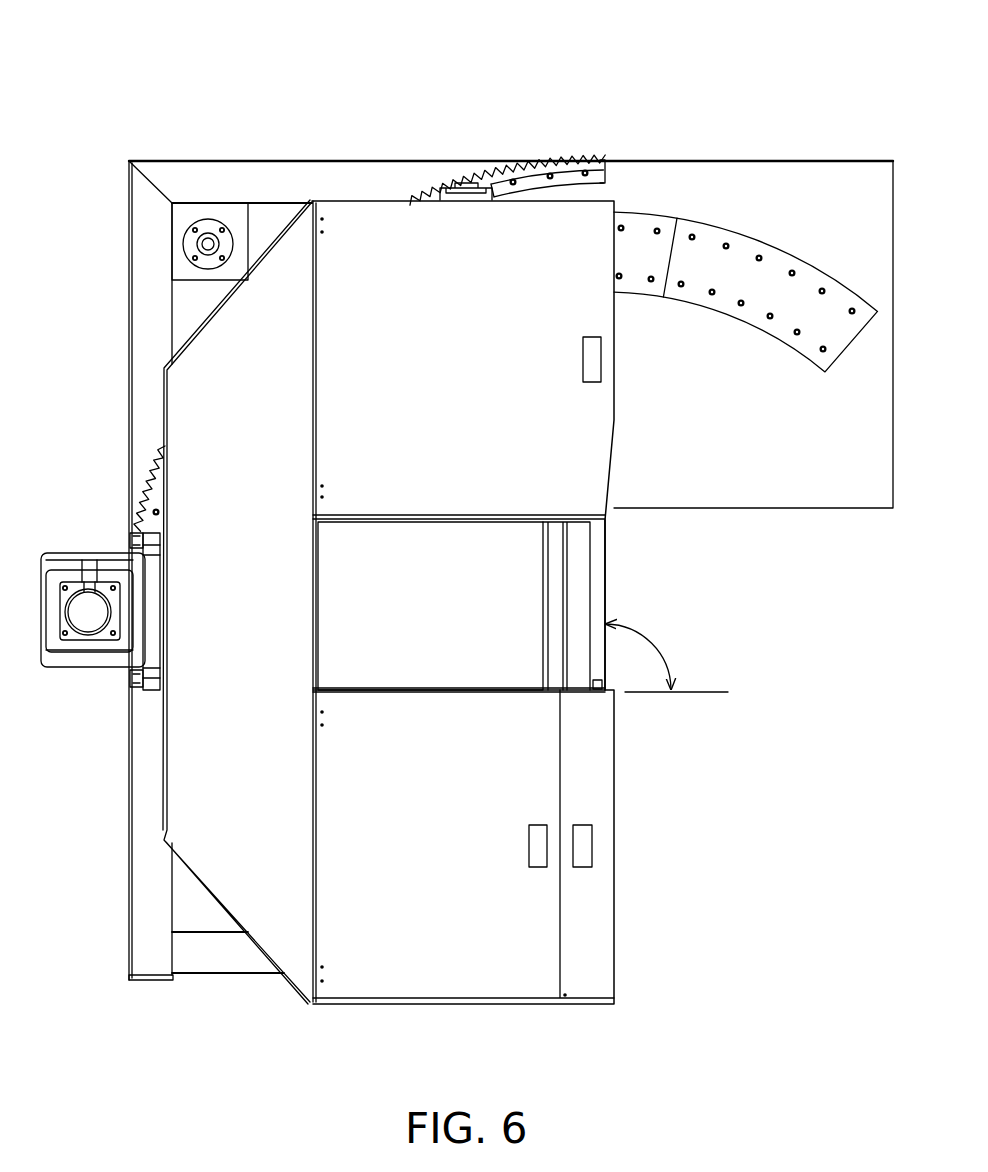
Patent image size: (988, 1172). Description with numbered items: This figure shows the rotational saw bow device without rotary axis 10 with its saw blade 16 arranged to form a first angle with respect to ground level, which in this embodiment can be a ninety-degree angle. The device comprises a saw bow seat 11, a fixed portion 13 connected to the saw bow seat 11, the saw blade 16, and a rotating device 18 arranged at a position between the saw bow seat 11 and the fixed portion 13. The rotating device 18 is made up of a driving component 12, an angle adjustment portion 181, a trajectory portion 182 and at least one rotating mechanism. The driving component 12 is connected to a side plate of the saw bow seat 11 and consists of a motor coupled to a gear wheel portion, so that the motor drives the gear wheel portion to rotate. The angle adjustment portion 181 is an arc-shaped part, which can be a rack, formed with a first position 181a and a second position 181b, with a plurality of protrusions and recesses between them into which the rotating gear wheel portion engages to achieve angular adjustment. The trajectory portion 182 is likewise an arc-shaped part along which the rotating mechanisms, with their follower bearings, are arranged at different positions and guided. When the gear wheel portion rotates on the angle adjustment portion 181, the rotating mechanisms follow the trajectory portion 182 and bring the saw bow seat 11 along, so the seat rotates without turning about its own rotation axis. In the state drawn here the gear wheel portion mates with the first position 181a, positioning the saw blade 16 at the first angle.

The rotational saw bow device without rotary axis 10 is at (120, 65).
The saw bow seat 11 is at (595, 965).
The driving component 12 is at (88, 612).
The fixed portion 13 is at (750, 172).
The saw blade 16 is at (605, 562).
The rotating device 18 is at (512, 70).
The angle adjustment portion 181 is at (527, 163).
The first position 181a is at (140, 533).
The second position 181b is at (600, 160).
The trajectory portion 182 is at (797, 296).